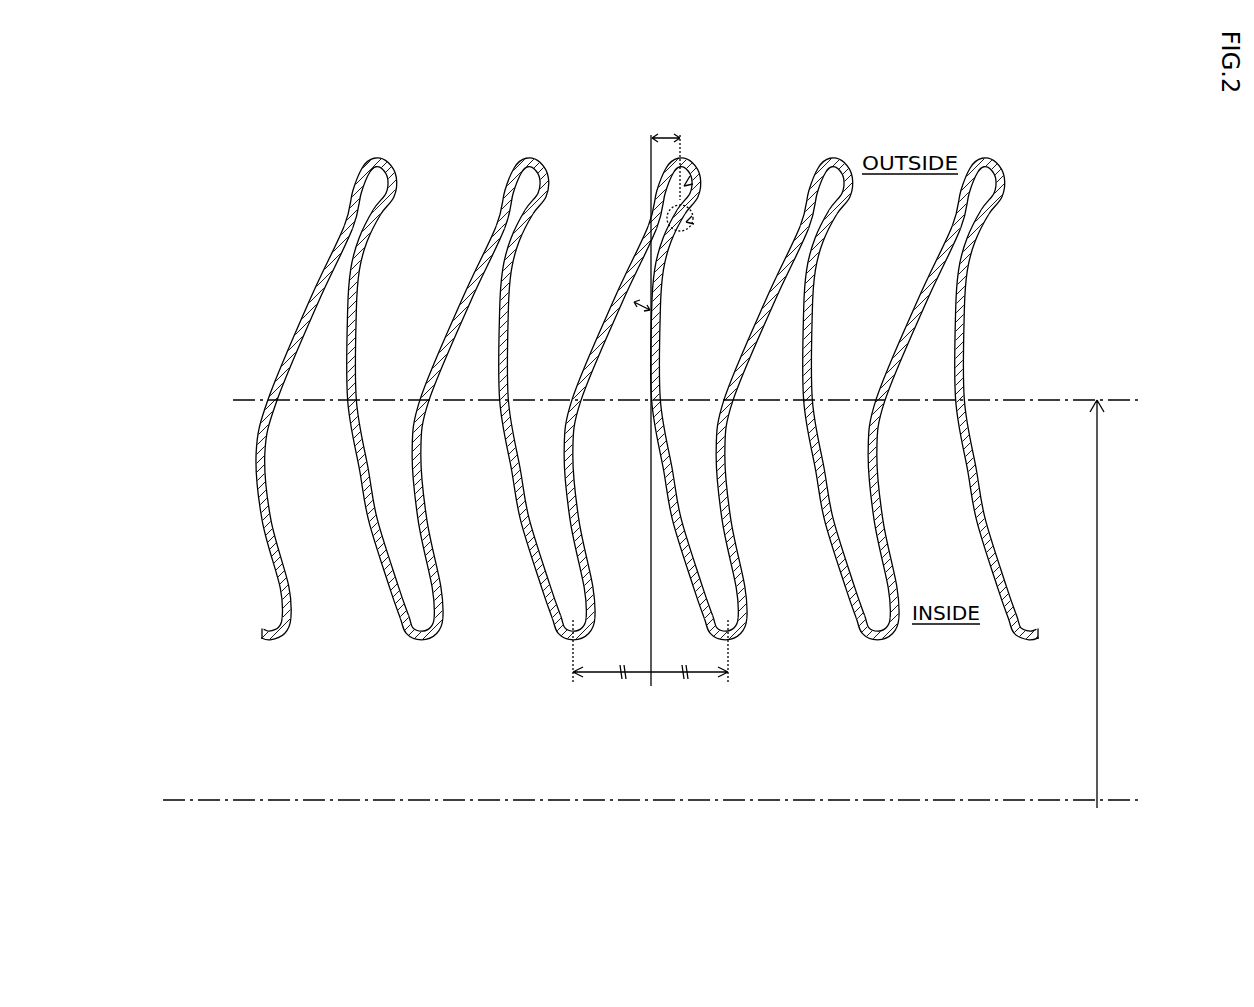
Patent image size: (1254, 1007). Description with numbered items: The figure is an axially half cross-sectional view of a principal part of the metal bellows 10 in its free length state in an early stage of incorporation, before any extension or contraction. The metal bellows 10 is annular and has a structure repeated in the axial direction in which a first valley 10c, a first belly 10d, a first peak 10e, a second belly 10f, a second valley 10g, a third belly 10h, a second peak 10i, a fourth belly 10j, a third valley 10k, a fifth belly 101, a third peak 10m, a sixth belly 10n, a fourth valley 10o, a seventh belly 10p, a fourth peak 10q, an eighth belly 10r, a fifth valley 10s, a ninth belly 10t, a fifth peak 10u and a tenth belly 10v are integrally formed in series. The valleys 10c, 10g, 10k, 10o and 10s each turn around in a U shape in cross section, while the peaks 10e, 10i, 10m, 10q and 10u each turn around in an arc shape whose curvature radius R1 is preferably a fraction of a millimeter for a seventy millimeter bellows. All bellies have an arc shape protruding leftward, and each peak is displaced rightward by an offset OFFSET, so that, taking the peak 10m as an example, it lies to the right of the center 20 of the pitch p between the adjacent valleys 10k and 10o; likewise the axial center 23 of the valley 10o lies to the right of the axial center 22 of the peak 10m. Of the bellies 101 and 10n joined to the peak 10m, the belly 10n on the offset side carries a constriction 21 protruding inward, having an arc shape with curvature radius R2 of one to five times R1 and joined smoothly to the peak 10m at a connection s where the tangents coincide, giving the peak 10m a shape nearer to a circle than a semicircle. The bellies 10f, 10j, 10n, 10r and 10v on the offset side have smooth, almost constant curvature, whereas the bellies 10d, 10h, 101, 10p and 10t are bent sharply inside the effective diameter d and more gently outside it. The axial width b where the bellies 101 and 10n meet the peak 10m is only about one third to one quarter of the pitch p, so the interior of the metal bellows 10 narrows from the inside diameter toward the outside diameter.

The metal bellows 10 is at (811, 65).
The first valley 10c is at (262, 632).
The first belly 10d is at (270, 398).
The first peak 10e is at (374, 160).
The second belly 10f is at (357, 352).
The second valley 10g is at (418, 635).
The third belly 10h is at (462, 312).
The second peak 10i is at (527, 160).
The fourth belly 10j is at (509, 360).
The third valley 10k is at (572, 637).
The fifth belly 101 is at (614, 318).
The third peak 10m is at (680, 160).
The sixth belly 10n is at (699, 380).
The fourth valley 10o is at (737, 637).
The seventh belly 10p is at (765, 318).
The fourth peak 10q is at (832, 160).
The eighth belly 10r is at (813, 360).
The fifth valley 10s is at (880, 630).
The ninth belly 10t is at (918, 315).
The fifth peak 10u is at (985, 160).
The tenth belly 10v is at (964, 360).
The center of the pitch 20 is at (651, 648).
The constriction 21 is at (684, 220).
The axial center of the peak 22 is at (660, 136).
The axial center of the adjacent valley 23 is at (728, 673).
The curvature radius of the peak R1 is at (684, 186).
The curvature radius of the constriction R2 is at (686, 222).
The connection s is at (657, 205).
The axial width b is at (638, 304).
The pitch p is at (640, 675).
The effective diameter d is at (1104, 604).
The offset OFFSET is at (663, 135).